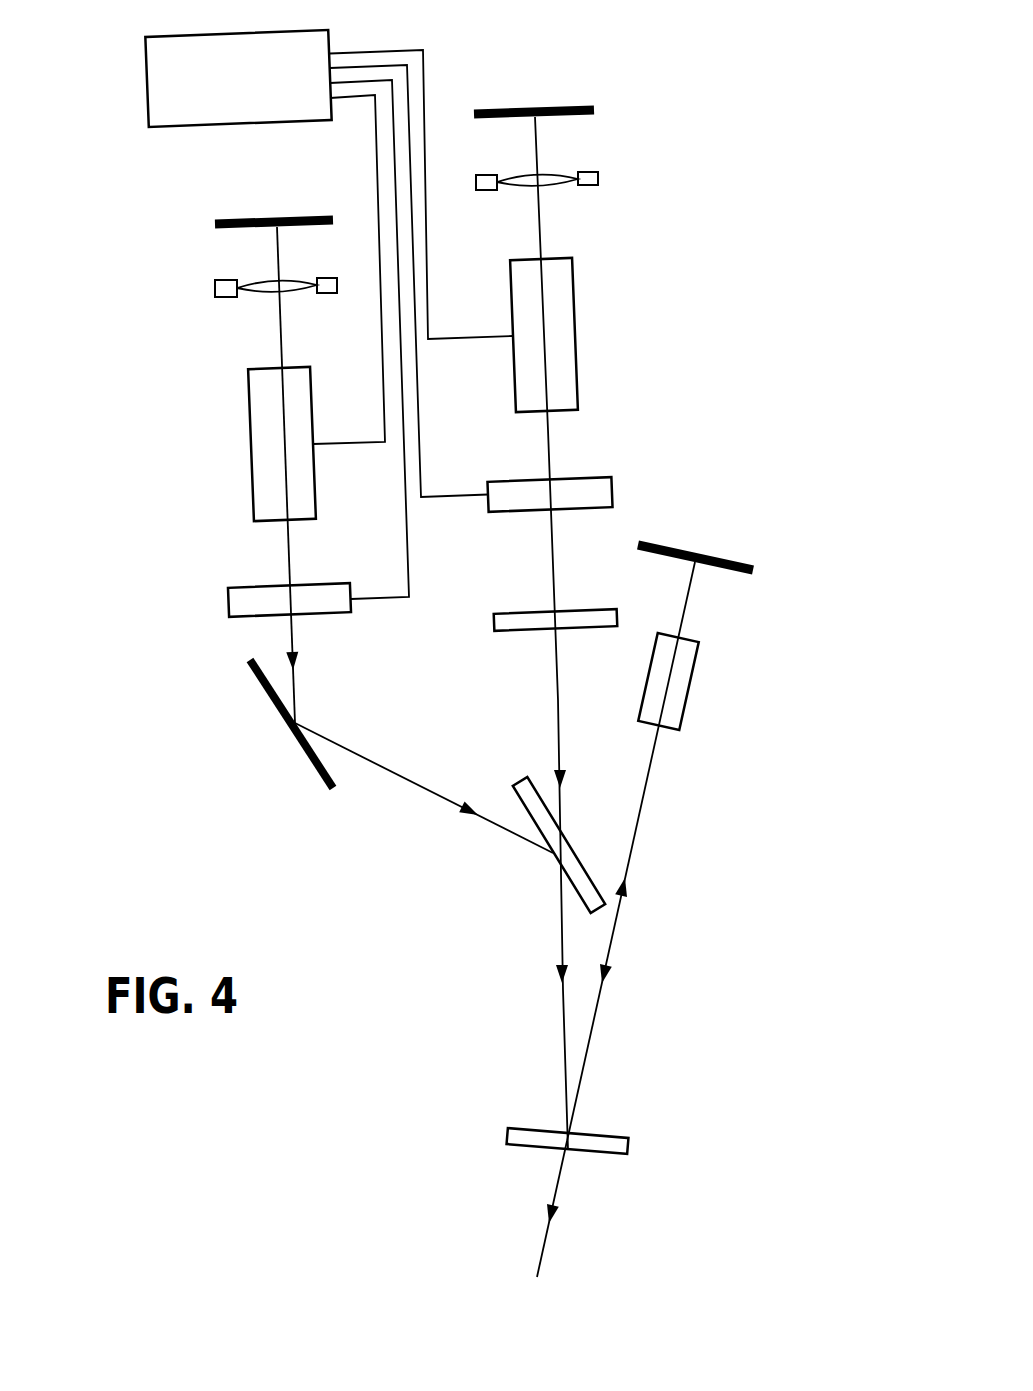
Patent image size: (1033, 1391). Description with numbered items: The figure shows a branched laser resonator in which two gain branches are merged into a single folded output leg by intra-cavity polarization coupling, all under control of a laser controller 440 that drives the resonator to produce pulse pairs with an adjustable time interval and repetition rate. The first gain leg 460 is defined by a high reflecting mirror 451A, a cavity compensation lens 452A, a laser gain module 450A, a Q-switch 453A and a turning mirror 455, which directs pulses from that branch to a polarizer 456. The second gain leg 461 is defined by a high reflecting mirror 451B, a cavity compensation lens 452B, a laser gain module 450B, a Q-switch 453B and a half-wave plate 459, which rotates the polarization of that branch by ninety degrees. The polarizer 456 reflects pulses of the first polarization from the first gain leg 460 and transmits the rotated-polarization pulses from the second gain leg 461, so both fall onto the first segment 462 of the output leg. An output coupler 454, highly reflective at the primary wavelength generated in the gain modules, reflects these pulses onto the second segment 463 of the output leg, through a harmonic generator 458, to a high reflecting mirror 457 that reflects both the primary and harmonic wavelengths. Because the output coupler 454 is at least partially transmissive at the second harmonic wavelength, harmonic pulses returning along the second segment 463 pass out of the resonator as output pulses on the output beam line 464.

The laser controller 440 is at (177, 33).
The laser gain module 450A is at (250, 422).
The laser gain module 450B is at (577, 312).
The high reflecting mirror 451A is at (238, 219).
The high reflecting mirror 451B is at (567, 106).
The cavity compensation lens 452A is at (215, 288).
The cavity compensation lens 452B is at (598, 177).
The Q-switch 453A is at (228, 603).
The Q-switch 453B is at (612, 488).
The output coupler 454 is at (507, 1133).
The turning mirror 455 is at (333, 790).
The polarizer 456 is at (513, 790).
The high reflecting mirror 457 is at (753, 568).
The harmonic generator 458 is at (690, 688).
The half-wave plate 459 is at (494, 622).
The first gain leg 460 is at (427, 784).
The second gain leg 461 is at (559, 755).
The first segment of the output leg 462 is at (565, 1055).
The second segment of the output leg 463 is at (615, 931).
The output beam line 464 is at (541, 1253).